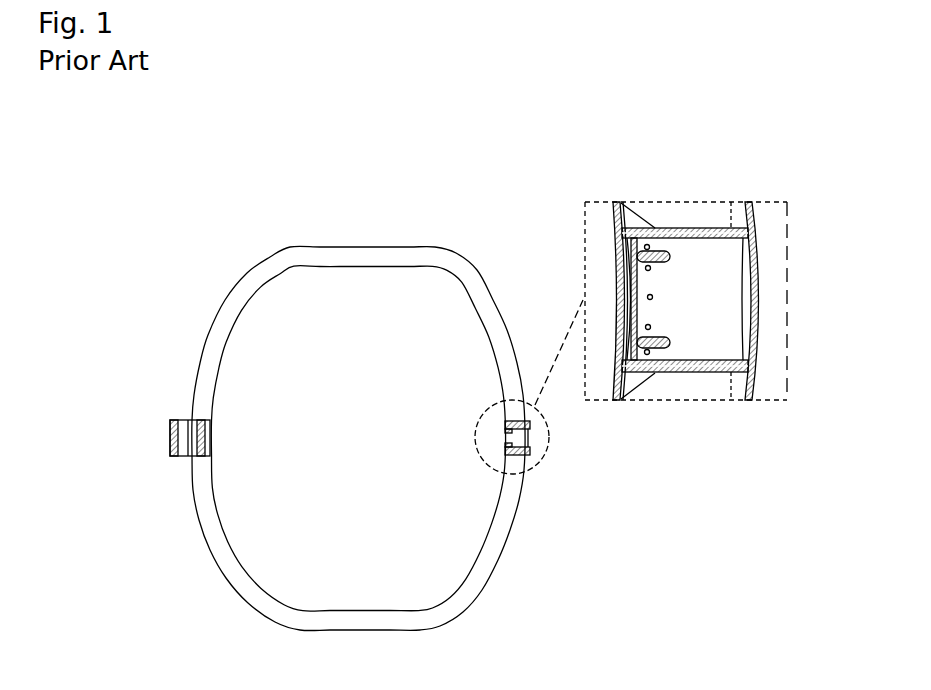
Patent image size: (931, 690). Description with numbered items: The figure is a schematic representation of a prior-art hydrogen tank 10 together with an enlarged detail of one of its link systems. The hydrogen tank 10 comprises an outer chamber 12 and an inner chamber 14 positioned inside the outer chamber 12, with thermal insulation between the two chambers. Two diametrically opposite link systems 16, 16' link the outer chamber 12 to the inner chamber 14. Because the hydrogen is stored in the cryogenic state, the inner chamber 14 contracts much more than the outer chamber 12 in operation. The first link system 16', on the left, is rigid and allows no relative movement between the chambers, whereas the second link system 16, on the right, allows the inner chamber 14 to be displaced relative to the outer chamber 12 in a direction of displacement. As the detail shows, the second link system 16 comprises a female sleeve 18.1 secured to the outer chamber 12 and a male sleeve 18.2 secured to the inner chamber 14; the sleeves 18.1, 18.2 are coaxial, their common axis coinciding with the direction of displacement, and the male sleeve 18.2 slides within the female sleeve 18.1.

The hydrogen tank 10 is at (464, 377).
The outer chamber 12 is at (826, 390).
The inner chamber 14 is at (440, 367).
The second link system 16 is at (611, 350).
The first link system 16' is at (142, 413).
The female sleeve 18.1 is at (701, 226).
The male sleeve 18.2 is at (665, 368).